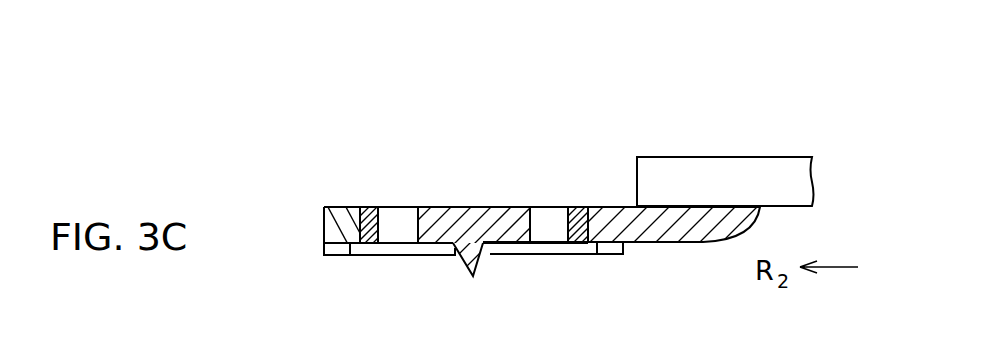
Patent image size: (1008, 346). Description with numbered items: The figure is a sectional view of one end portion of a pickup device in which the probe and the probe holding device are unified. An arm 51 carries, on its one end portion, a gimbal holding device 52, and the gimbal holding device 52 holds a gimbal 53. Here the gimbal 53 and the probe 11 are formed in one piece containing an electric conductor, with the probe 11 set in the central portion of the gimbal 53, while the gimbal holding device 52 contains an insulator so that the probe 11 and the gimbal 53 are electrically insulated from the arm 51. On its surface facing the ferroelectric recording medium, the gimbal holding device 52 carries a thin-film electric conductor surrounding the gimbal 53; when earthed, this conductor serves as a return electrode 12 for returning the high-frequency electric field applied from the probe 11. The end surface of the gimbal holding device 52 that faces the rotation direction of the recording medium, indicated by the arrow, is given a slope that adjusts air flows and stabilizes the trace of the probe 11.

The probe 11 is at (477, 271).
The return electrode 12 is at (340, 255).
The arm 51 is at (730, 166).
The gimbal holding device 52 is at (648, 237).
The gimbal 53 is at (479, 207).